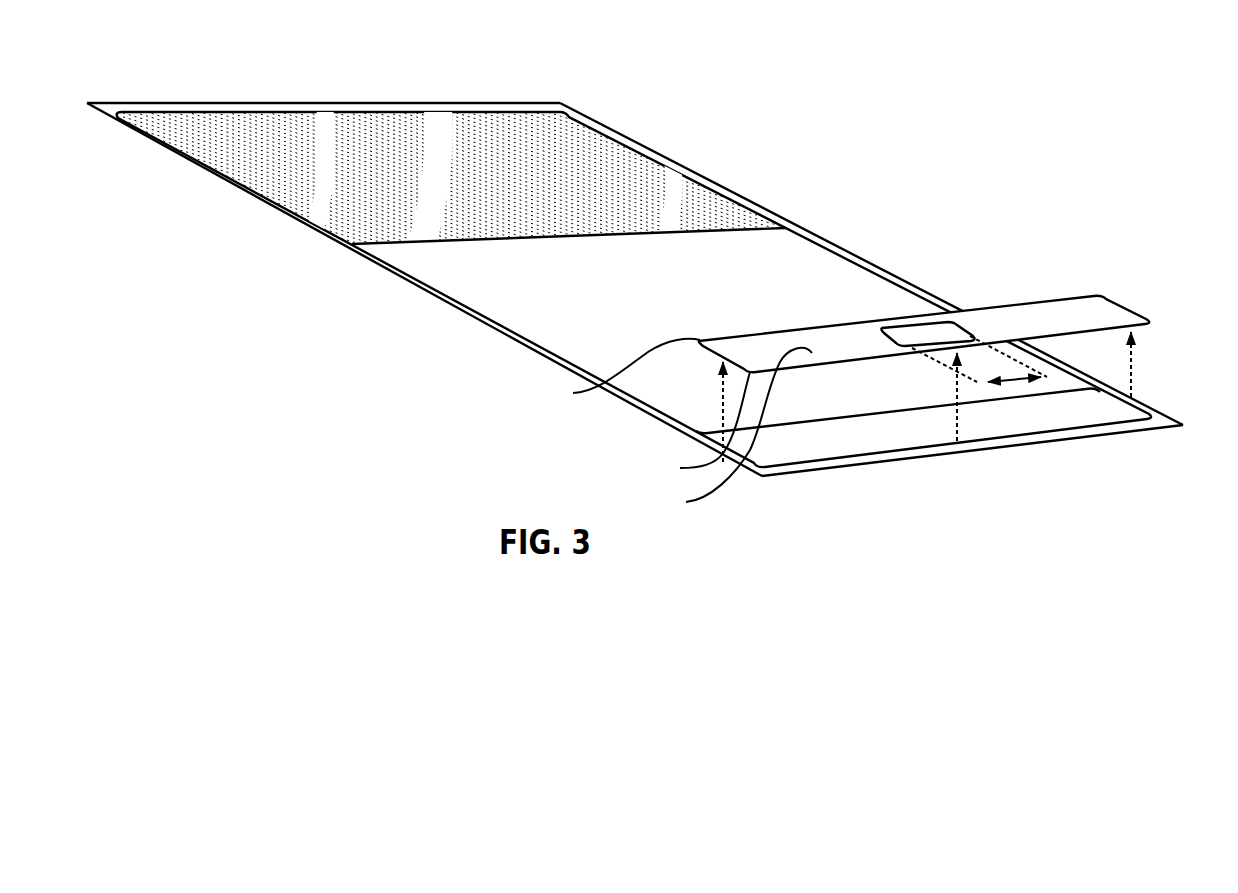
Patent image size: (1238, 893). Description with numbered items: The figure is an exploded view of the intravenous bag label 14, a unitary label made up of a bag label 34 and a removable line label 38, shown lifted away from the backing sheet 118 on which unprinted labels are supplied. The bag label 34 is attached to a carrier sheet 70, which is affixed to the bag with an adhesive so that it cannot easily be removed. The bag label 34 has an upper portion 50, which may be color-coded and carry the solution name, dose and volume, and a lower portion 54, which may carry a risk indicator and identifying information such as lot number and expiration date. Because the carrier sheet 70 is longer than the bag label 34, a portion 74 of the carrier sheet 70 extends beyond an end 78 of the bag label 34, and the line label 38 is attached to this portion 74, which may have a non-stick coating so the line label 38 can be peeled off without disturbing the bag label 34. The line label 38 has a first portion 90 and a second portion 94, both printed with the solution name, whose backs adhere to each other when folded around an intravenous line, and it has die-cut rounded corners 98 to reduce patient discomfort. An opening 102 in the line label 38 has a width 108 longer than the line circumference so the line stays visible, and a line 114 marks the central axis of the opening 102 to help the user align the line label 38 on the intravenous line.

The intravenous bag label 14 is at (831, 133).
The bag label 34 is at (861, 214).
The line label 38 is at (1134, 285).
The upper portion 50 is at (588, 177).
The lower portion 54 is at (853, 280).
The carrier sheet 70 is at (655, 423).
The portion of the carrier sheet 74 is at (1170, 427).
The end of the bag label 78 is at (1103, 388).
The first portion 90 is at (730, 432).
The second portion 94 is at (1047, 315).
The rounded corners 98 is at (1172, 284).
The opening 102 is at (944, 334).
The width 108 is at (1010, 380).
The line 114 is at (903, 322).
The backing sheet 118 is at (88, 103).